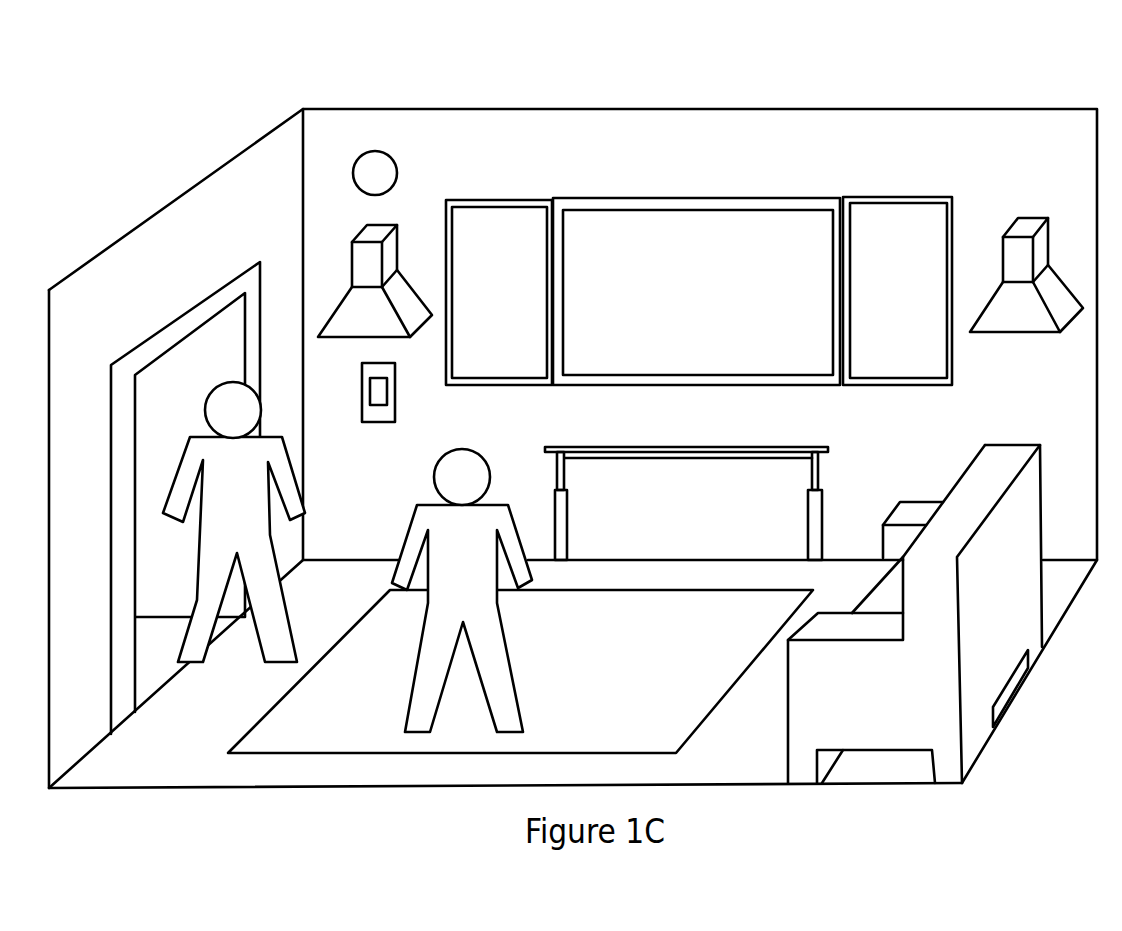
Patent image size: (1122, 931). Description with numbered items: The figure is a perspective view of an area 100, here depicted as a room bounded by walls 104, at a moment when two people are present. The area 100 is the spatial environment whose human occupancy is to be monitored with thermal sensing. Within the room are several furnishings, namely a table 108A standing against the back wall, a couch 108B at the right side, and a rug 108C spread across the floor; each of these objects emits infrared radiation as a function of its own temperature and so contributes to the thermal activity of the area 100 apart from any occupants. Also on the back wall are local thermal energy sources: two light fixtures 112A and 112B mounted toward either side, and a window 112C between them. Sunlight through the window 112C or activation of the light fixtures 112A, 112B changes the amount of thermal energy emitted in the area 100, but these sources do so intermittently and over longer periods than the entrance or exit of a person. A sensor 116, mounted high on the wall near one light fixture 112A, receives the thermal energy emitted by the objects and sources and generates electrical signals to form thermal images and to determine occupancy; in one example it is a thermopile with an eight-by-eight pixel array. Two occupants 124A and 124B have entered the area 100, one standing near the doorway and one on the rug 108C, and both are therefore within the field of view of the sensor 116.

The area 100 is at (982, 70).
The walls 104 is at (133, 228).
The table 108A is at (553, 487).
The couch 108B is at (972, 459).
The rug 108C is at (267, 748).
The light fixture 112A is at (378, 232).
The light fixture 112B is at (1022, 228).
The window 112C is at (693, 198).
The sensor 116 is at (385, 167).
The occupant 124A is at (413, 512).
The occupant 124B is at (290, 607).